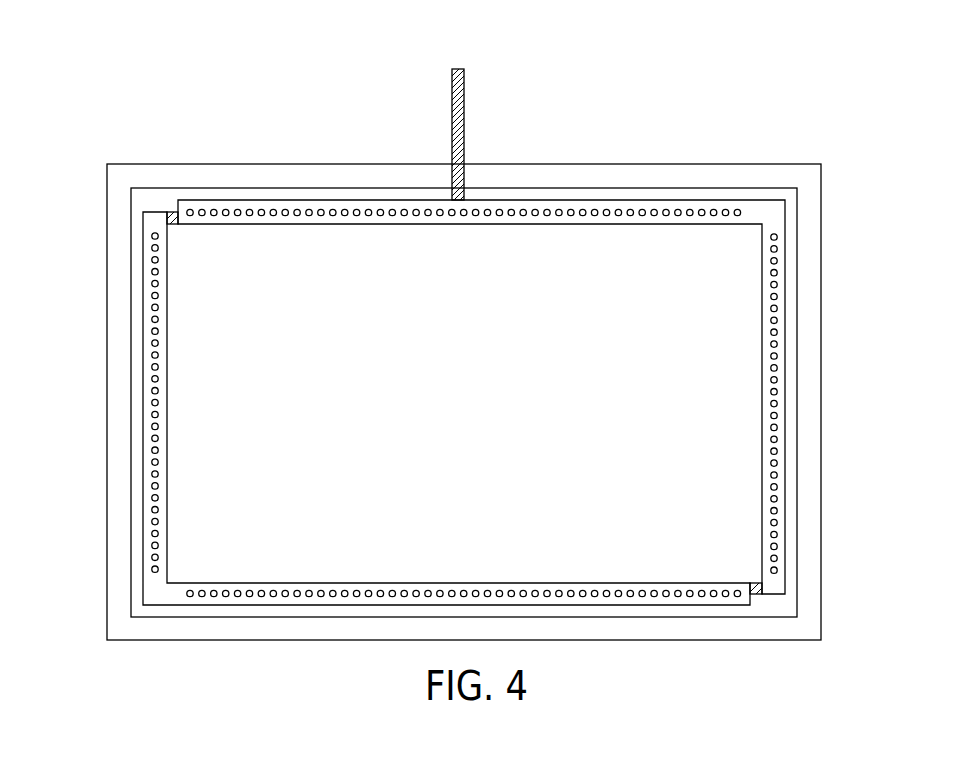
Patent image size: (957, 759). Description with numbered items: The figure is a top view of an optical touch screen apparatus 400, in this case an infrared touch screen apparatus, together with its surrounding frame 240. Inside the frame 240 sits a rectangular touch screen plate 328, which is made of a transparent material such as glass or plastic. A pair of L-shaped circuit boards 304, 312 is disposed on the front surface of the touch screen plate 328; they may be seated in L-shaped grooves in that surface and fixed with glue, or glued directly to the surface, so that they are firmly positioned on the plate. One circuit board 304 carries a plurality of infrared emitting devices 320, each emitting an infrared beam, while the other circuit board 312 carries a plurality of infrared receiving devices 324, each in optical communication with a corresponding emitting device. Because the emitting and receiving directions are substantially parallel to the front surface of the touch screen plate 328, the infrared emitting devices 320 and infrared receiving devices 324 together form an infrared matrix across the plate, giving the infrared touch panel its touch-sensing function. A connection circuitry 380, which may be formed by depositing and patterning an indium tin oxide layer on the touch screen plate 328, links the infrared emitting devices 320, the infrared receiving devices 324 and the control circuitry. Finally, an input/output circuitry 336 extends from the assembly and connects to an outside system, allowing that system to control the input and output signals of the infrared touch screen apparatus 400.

The frame 240 is at (266, 165).
The touch screen plate 328 is at (765, 188).
The circuit board 304 is at (145, 355).
The circuit board 312 is at (630, 202).
The infrared emitting devices 320 is at (152, 260).
The infrared receiving devices 324 is at (777, 262).
The connection circuitry 380 is at (173, 211).
The input/output circuitry 336 is at (465, 130).
The optical touch screen apparatus 400 is at (469, 350).